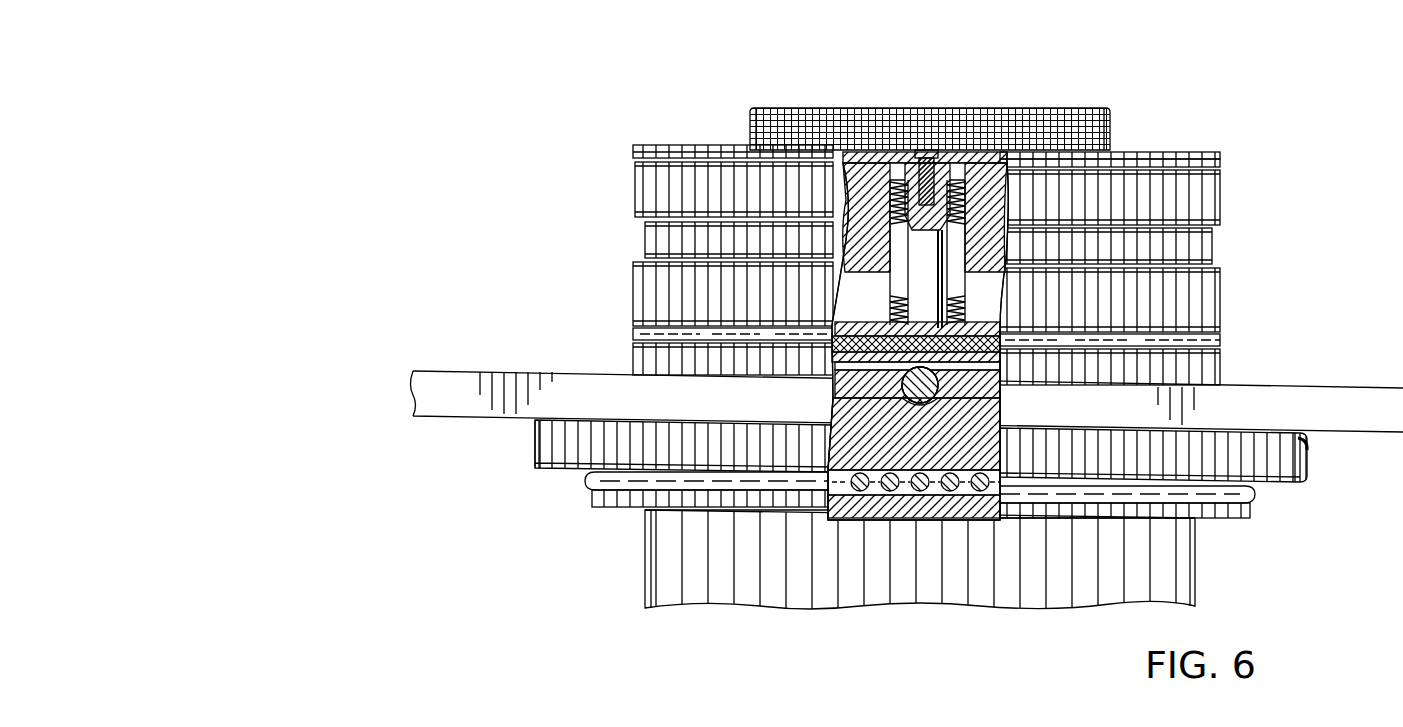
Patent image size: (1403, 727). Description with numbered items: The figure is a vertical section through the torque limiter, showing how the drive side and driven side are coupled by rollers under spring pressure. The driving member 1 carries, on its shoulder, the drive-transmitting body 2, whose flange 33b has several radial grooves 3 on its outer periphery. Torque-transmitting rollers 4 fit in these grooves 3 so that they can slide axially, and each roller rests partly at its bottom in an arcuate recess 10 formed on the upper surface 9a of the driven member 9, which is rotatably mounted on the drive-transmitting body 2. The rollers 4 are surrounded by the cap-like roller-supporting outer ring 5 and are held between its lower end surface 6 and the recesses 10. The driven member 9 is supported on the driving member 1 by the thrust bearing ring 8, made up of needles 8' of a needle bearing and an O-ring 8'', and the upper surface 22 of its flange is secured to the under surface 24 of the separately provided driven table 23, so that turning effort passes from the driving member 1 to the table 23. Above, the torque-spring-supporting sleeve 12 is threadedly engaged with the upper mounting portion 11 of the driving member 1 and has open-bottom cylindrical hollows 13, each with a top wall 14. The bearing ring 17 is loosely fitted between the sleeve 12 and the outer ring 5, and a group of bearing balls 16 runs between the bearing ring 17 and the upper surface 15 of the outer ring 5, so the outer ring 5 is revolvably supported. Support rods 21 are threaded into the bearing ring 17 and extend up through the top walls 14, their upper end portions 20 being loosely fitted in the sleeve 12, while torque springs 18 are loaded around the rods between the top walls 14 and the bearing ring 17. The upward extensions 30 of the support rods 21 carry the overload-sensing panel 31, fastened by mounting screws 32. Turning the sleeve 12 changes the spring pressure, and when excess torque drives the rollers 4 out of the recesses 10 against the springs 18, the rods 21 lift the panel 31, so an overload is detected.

The driving member 1 is at (655, 568).
The drive-transmitting body 2 is at (990, 365).
The radial grooves 3 is at (914, 390).
The torque-transmitting rollers 4 is at (934, 394).
The roller-supporting outer ring 5 is at (840, 345).
The lower end surface 6 is at (850, 360).
The thrust bearing ring 8 is at (907, 520).
The needles 8' is at (914, 515).
The O-ring 8'' is at (895, 492).
The driven member 9 is at (838, 438).
The upper surface 9a is at (1000, 380).
The arcuate recesses 10 is at (920, 403).
The upper mounting portion 11 is at (1022, 110).
The torque-spring-supporting sleeve 12 is at (850, 180).
The cylindrical hollows 13 is at (962, 250).
The top wall 14 is at (868, 178).
The upper surface 15 is at (1106, 337).
The bearing balls 16 is at (995, 320).
The bearing ring 17 is at (880, 325).
The torque springs 18 is at (957, 176).
The upper end portions 20 is at (700, 156).
The support rods 21 is at (685, 148).
The upper surface 22 is at (1250, 432).
The driven table 23 is at (1320, 398).
The under surface 24 is at (1305, 456).
The upward extensions 30 is at (910, 165).
The overload-sensing panel 31 is at (1120, 157).
The mounting screws 32 is at (922, 158).
The flange 33b is at (846, 430).